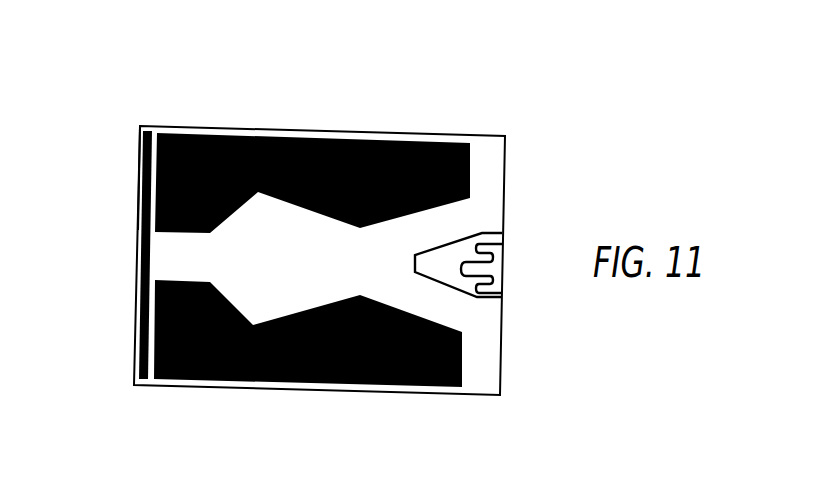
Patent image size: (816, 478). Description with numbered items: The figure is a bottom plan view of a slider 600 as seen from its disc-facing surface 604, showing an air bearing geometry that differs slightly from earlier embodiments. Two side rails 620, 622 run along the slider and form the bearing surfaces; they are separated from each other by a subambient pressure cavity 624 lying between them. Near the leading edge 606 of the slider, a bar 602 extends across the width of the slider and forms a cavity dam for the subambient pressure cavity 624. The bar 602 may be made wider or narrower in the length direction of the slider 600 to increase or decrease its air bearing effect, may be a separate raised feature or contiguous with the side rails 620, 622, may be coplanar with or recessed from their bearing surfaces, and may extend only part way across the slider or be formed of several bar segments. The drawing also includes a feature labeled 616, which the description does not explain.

The slider 600 is at (515, 118).
The bar 602 is at (145, 160).
The disc-facing surface 604 is at (276, 134).
The leading edge 606 is at (137, 258).
The connector 616 is at (500, 320).
The side rail 620 is at (368, 137).
The side rail 622 is at (362, 383).
The subambient pressure cavity 624 is at (342, 273).